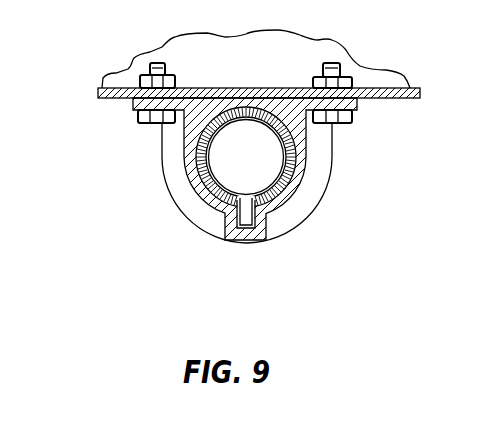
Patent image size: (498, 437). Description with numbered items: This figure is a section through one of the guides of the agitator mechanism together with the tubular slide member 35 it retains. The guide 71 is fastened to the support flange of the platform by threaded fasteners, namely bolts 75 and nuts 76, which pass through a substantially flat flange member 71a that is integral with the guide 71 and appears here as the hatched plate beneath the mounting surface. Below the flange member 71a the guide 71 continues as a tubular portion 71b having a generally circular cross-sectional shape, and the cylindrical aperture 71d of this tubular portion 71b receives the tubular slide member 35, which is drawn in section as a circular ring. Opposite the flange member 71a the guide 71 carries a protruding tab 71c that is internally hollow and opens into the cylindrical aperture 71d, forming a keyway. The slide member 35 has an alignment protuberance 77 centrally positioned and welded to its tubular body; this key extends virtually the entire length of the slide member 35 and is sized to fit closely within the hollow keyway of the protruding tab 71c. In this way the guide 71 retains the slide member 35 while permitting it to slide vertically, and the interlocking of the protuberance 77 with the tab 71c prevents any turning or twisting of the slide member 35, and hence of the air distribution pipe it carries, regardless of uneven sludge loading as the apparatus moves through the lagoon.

The tubular slide member 35 is at (247, 108).
The guide 71 is at (307, 167).
The flange member 71a is at (355, 105).
The tubular portion 71b is at (193, 191).
The protruding tab 71c is at (270, 223).
The cylindrical aperture 71d is at (212, 200).
The bolt 75 is at (155, 123).
The nut 76 is at (136, 83).
The alignment protuberance 77 is at (241, 232).